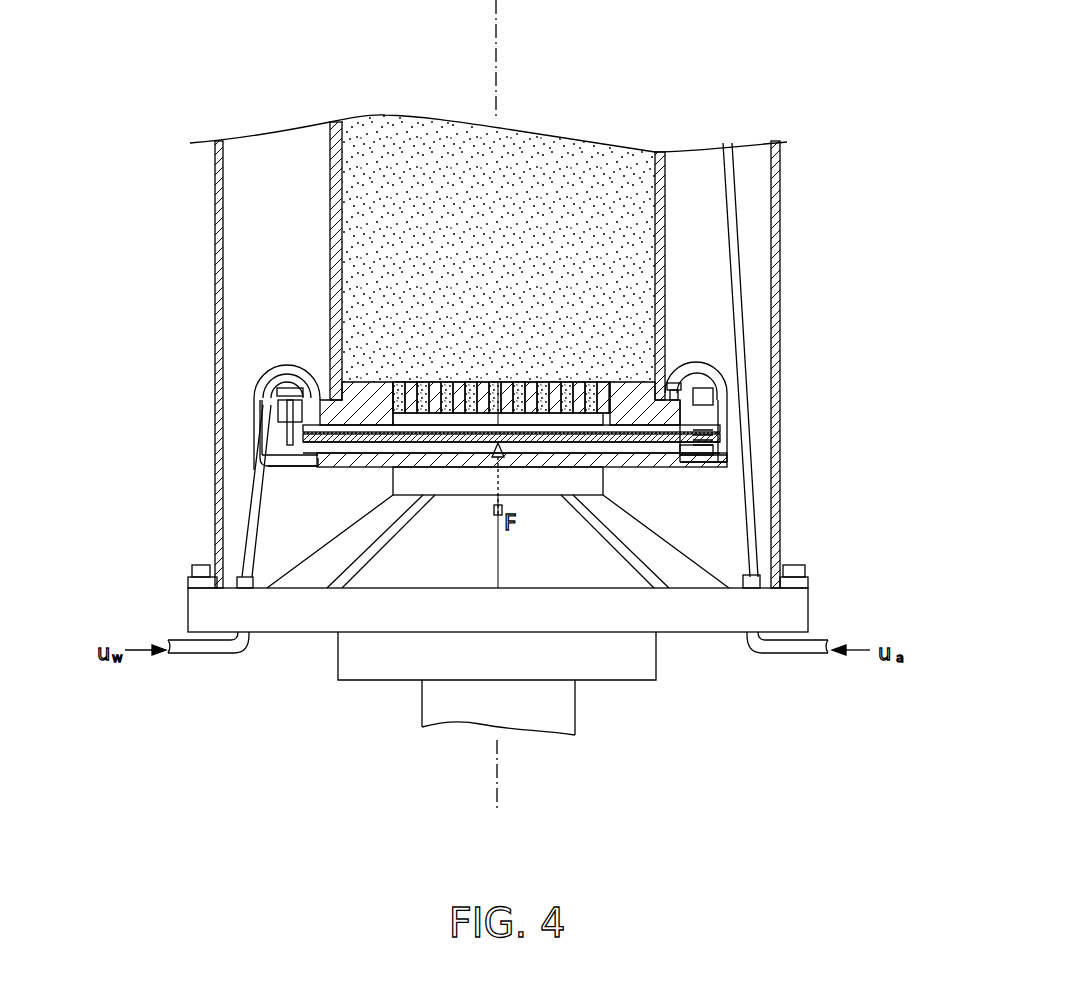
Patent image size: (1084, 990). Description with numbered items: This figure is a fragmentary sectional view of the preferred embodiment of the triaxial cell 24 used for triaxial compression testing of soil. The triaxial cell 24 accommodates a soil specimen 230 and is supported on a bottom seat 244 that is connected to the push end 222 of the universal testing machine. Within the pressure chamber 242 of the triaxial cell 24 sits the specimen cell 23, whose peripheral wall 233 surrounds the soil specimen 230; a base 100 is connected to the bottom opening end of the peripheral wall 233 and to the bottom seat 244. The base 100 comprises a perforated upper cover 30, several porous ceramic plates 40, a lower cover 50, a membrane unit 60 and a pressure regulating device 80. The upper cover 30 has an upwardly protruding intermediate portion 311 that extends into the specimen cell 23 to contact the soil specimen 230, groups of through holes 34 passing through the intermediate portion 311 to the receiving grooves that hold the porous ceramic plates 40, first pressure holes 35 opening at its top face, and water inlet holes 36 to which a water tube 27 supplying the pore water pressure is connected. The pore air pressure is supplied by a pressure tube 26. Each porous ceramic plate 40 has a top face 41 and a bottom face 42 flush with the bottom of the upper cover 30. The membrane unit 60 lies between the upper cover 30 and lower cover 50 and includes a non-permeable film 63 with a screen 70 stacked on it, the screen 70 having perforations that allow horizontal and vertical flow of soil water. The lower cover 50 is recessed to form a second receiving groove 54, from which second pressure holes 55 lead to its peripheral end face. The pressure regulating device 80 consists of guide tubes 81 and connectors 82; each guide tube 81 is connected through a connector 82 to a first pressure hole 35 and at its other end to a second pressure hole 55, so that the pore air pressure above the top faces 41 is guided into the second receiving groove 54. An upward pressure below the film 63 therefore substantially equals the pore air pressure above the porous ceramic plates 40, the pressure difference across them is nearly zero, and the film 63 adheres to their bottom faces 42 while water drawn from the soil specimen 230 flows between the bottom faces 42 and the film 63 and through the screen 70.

The peripheral wall 233 is at (332, 155).
The pressure chamber 242 is at (283, 193).
The triaxial cell 24 is at (337, 228).
The soil specimen 230 is at (636, 178).
The specimen cell 23 is at (683, 180).
The pressure tube 26 is at (734, 181).
The intermediate portion 311 is at (624, 377).
The upper cover 30 is at (598, 393).
The through holes 34 is at (640, 395).
The connectors 82 is at (695, 405).
The first pressure holes 35 is at (712, 374).
The pressure regulating device 80 is at (745, 398).
The porous ceramic plates 40 is at (420, 425).
The membrane unit 60 is at (730, 437).
The non-permeable film 63 is at (715, 450).
The second receiving groove 54 is at (720, 458).
The second pressure holes 55 is at (300, 463).
The top faces 41 is at (418, 410).
The bottom face 42 is at (592, 433).
The base 100 is at (376, 478).
The bottom seat 244 is at (200, 612).
The push end 222 is at (362, 655).
The water tube 27 is at (240, 552).
The water inlet holes 36 is at (300, 407).
The lower cover 50 is at (288, 473).
The screen 70 is at (290, 429).
The guide tubes 81 is at (290, 437).